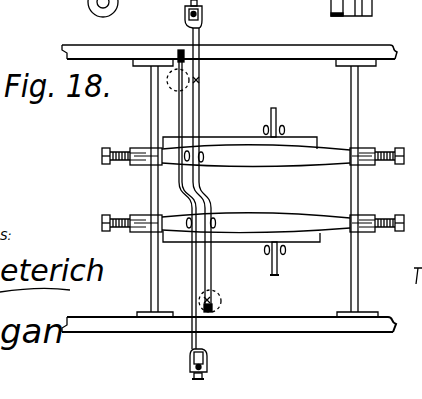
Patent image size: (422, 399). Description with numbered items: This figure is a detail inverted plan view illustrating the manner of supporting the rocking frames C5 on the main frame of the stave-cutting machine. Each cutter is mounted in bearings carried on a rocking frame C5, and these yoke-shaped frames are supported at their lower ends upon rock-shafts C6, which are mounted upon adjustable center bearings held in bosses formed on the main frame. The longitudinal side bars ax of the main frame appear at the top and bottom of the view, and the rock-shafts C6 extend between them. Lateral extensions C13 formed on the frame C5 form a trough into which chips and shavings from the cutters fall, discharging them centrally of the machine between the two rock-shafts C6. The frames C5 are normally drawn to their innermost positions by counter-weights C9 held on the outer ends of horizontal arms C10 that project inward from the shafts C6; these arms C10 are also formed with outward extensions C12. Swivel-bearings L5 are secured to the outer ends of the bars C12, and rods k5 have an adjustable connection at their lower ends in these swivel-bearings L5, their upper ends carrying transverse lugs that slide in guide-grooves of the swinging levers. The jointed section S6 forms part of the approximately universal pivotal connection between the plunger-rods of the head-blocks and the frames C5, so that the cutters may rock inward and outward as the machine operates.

The longitudinal side bars ax is at (271, 334).
The swivel-bearings L5 is at (192, 190).
The rods k5 is at (203, 9).
The outward extensions C12 is at (199, 108).
The horizontal arms C10 is at (216, 268).
The counter-weights C9 is at (199, 81).
The rock-shafts C6 is at (374, 187).
The lateral extensions C13 is at (321, 240).
The jointed section S6 is at (278, 113).
The rocking frames C5 is at (284, 126).